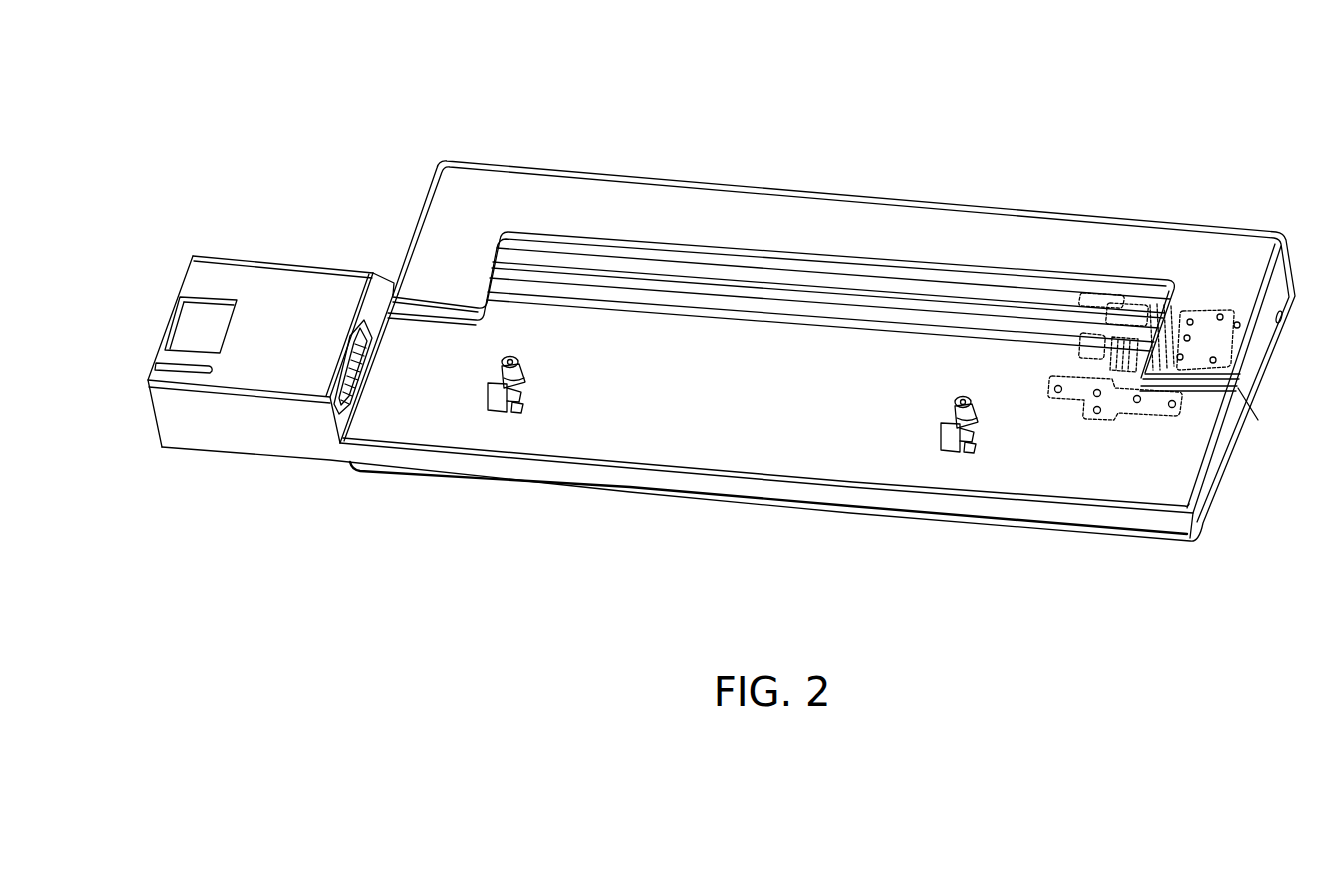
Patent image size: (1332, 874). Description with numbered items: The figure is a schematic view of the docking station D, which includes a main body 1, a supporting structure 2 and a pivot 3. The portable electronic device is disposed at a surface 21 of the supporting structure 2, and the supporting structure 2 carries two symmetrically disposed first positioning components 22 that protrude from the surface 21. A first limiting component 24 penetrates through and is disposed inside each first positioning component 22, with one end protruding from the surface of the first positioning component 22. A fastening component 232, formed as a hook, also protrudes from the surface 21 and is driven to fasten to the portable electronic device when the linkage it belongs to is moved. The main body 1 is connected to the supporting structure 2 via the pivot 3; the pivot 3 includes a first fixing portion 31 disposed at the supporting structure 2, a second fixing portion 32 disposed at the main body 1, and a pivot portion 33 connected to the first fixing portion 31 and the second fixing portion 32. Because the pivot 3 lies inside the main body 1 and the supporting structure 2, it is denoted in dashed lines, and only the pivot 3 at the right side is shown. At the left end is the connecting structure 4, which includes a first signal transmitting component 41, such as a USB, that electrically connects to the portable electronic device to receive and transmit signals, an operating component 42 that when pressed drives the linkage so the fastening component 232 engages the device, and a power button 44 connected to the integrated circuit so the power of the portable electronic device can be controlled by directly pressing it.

The main body 1 is at (1205, 253).
The supporting structure 2 is at (1180, 468).
The surface 21 is at (677, 436).
The first positioning component 22 is at (522, 376).
The fastening component 232 is at (490, 383).
The first limiting component 24 is at (510, 356).
The pivot 3 is at (1161, 359).
The first fixing portion 31 is at (1105, 413).
The second fixing portion 32 is at (1197, 313).
The pivot portion 33 is at (1105, 351).
The connecting structure 4 is at (283, 290).
The first signal transmitting component 41 is at (362, 392).
The operating component 42 is at (180, 325).
The power button 44 is at (155, 367).
The docking station D is at (547, 75).